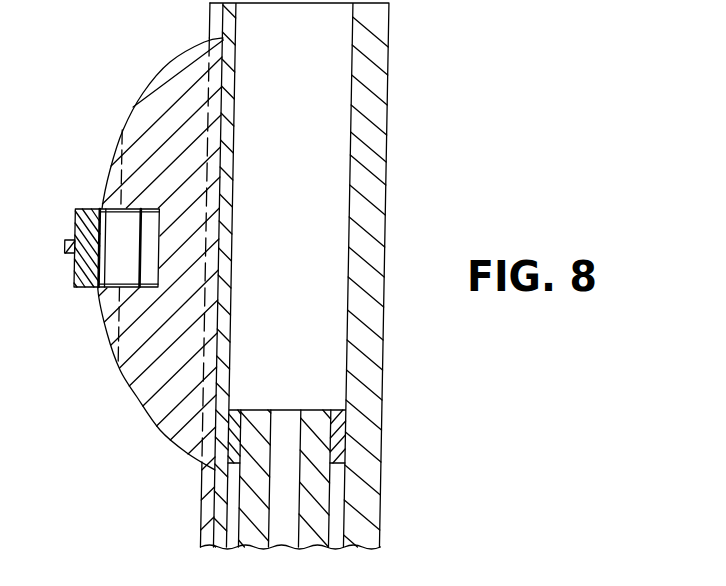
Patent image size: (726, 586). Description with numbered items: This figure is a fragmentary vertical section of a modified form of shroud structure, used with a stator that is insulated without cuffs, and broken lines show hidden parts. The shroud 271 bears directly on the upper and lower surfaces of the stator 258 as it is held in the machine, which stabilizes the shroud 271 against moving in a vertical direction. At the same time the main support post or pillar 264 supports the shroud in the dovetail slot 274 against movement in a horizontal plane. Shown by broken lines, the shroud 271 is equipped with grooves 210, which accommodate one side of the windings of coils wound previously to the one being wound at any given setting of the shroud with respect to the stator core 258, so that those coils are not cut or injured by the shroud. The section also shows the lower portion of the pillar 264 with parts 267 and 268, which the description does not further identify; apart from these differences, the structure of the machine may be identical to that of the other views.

The main support post 264 is at (373, 198).
The dovetail slot 274 is at (223, 23).
The shroud 271 is at (150, 113).
The grooves 210 is at (122, 188).
The stator 258 is at (85, 286).
The insert 267 is at (315, 410).
The shoulder 268 is at (343, 430).